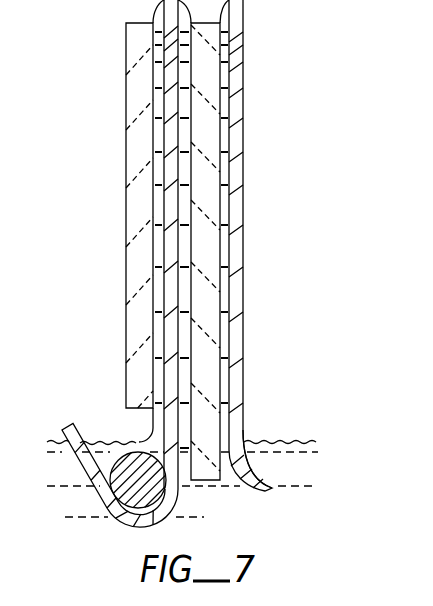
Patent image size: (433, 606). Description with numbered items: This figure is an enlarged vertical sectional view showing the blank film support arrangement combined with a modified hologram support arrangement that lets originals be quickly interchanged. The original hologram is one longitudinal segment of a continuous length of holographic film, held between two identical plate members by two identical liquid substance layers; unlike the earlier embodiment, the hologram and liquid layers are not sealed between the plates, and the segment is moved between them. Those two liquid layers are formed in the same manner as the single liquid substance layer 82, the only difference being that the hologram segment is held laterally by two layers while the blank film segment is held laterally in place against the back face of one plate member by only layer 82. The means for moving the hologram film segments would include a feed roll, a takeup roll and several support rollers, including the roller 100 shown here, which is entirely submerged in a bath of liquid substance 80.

The bath of liquid substance 80 is at (290, 462).
The liquid substance layer 82 is at (222, 377).
The support roller 100 is at (127, 507).